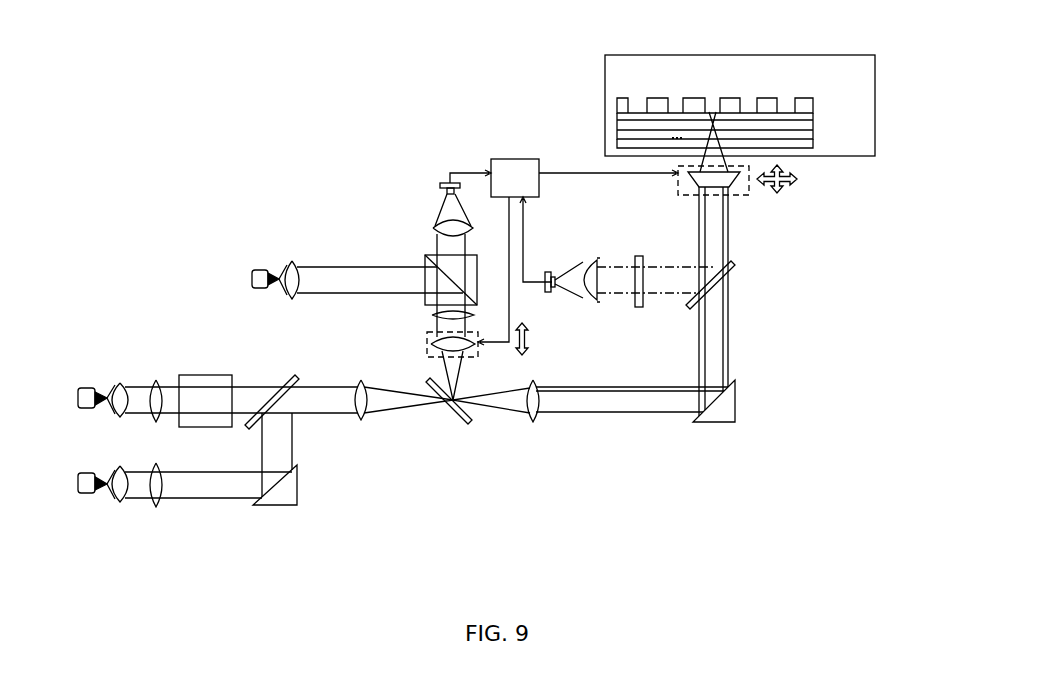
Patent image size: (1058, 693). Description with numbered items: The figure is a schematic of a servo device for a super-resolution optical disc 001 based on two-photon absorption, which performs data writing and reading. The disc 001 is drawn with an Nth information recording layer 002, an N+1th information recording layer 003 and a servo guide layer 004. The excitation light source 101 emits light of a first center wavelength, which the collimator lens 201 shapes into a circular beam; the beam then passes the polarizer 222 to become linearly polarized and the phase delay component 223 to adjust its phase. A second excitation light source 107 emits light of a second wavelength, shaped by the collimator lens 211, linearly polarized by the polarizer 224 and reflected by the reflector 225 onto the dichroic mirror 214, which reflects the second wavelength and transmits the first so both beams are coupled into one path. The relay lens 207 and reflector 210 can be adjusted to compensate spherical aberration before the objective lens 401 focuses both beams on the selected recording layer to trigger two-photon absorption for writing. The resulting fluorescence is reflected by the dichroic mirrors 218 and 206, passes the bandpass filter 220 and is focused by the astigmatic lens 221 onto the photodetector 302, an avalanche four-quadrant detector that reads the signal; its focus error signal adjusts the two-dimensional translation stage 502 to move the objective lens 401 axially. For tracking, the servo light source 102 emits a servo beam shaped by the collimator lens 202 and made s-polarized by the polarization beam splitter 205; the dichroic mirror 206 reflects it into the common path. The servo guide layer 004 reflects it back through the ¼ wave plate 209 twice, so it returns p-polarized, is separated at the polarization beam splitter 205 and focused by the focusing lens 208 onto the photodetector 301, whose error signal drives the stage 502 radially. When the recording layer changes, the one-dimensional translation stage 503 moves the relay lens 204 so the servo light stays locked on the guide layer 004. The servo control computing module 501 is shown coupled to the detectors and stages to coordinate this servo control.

The super-resolution optical disc 001 is at (876, 122).
The Nth information recording layer 002 is at (815, 139).
The N+1th information recording layer 003 is at (813, 128).
The servo guide layer 004 is at (806, 99).
The excitation light source 101 is at (80, 388).
The servo light source 102 is at (255, 272).
The two-photon second excitation light source 107 is at (80, 491).
The collimator lens 201 is at (118, 386).
The collimator lens 202 is at (290, 266).
The relay lens 204 is at (431, 343).
The polarization beam splitter 205 is at (427, 262).
The dichroic mirror 206 is at (450, 413).
The relay lens 207 is at (532, 422).
The focusing lens 208 is at (433, 229).
The ¼ wave plate 209 is at (432, 315).
The reflector 210 is at (718, 423).
The collimator lens 211 is at (118, 502).
The dichroic mirror 214 is at (283, 384).
The dichroic mirror 218 is at (733, 268).
The filter 220 is at (641, 307).
The astigmatic lens 221 is at (592, 300).
The polarizer 222 is at (154, 380).
The phase delay component 223 is at (205, 375).
The polarizer 224 is at (155, 506).
The reflector 225 is at (282, 506).
The photodetector 301 is at (440, 186).
The photodetector 302 is at (549, 292).
The objective lens 401 is at (697, 190).
The servo control computing module 501 is at (564, 252).
The two-dimensional translation stage 502 is at (678, 194).
The one-dimensional translation stage 503 is at (427, 352).